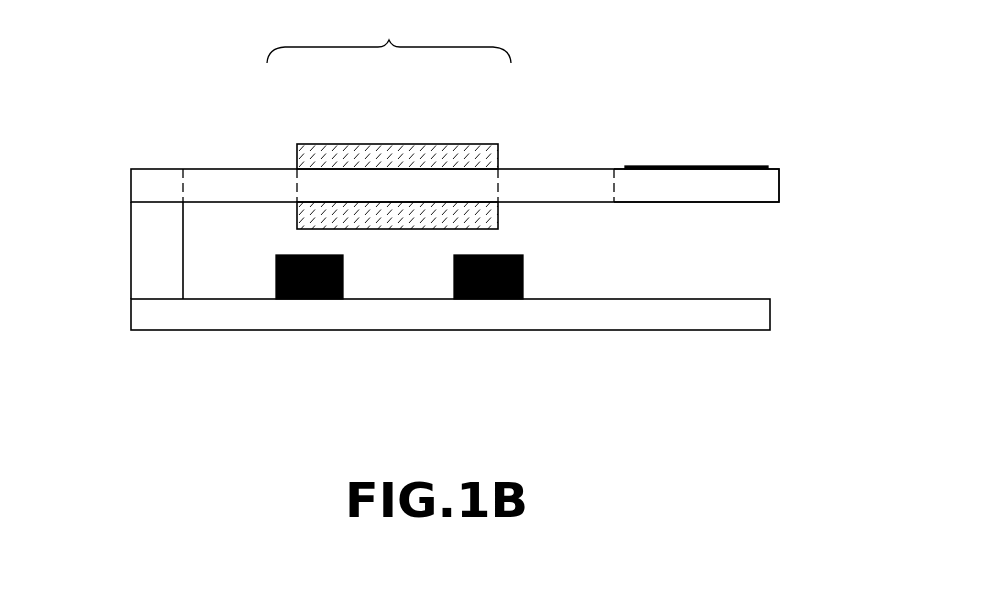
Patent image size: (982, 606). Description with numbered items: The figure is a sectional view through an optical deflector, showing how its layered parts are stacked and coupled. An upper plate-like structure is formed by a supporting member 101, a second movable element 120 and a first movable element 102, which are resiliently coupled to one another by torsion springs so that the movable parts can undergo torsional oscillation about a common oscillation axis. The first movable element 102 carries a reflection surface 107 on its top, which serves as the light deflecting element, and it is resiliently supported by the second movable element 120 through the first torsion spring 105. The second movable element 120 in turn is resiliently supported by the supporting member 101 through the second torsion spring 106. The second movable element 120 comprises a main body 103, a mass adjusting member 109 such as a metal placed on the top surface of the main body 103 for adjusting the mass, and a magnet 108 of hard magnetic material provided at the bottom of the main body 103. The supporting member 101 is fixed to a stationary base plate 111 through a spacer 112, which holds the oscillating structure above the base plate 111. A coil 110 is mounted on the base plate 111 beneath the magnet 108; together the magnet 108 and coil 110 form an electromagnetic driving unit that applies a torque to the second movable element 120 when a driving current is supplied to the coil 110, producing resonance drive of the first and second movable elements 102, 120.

The supporting member 101 is at (147, 173).
The first movable element 102 is at (750, 187).
The main body 103 is at (334, 176).
The first torsion spring 105 is at (565, 176).
The second torsion spring 106 is at (220, 176).
The reflection surface 107 is at (757, 167).
The magnet 108 is at (438, 214).
The mass adjusting member 109 is at (397, 155).
The coil 110 is at (492, 300).
The base plate 111 is at (296, 322).
The spacer 112 is at (144, 239).
The second movable element 120 is at (389, 38).